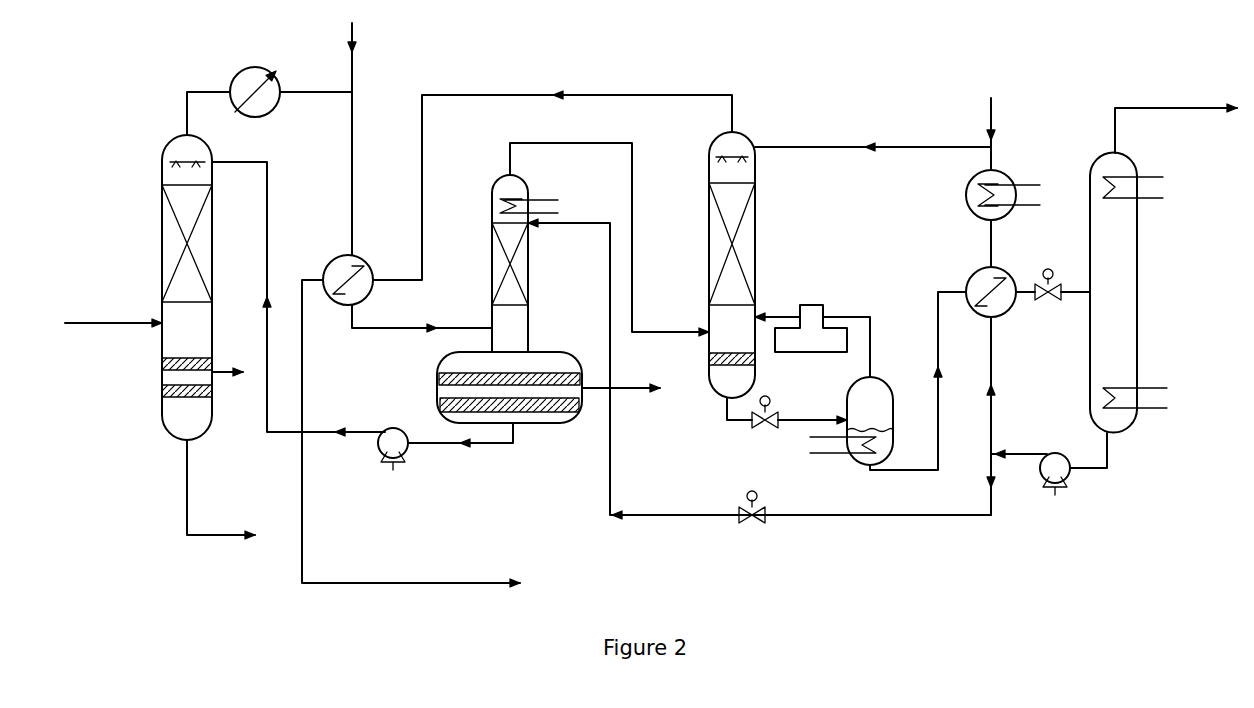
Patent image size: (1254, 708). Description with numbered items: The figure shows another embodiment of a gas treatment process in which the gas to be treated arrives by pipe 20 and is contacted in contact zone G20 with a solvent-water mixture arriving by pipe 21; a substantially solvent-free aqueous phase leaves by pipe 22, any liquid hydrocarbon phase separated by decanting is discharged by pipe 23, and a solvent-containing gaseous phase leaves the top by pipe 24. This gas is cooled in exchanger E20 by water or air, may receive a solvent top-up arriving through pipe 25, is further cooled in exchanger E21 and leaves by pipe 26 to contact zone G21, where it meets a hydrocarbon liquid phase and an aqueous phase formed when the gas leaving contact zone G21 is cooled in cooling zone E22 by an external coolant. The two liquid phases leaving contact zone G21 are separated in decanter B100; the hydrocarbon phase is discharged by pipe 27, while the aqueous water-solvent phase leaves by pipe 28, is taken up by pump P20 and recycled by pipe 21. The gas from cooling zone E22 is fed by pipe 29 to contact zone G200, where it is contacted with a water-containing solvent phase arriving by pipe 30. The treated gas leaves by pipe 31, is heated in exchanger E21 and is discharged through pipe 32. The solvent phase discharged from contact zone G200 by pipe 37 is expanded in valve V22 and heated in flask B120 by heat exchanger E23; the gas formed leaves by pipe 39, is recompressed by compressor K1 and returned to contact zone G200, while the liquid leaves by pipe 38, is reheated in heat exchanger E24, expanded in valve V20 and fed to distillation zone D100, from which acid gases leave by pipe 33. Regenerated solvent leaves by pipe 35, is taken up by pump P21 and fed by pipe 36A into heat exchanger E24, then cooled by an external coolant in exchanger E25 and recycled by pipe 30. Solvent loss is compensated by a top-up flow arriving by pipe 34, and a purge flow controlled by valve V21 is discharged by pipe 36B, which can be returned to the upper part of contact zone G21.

The pipe 20 is at (68, 320).
The pipe 21 is at (268, 202).
The pipe 22 is at (187, 480).
The pipe 23 is at (227, 368).
The pipe 24 is at (206, 89).
The pipe 25 is at (355, 35).
The pipe 26 is at (418, 324).
The pipe 27 is at (620, 388).
The pipe 28 is at (518, 445).
The pipe 29 is at (608, 142).
The pipe 30 is at (914, 142).
The pipe 31 is at (623, 94).
The pipe 32 is at (442, 580).
The pipe 33 is at (1198, 108).
The pipe 34 is at (995, 110).
The pipe 35 is at (1107, 470).
The pipe 36A is at (993, 393).
The pipe 36B is at (875, 518).
The pipe 37 is at (722, 411).
The pipe 38 is at (917, 381).
The pipe 39 is at (868, 315).
The exchanger E20 is at (266, 67).
The exchanger E21 is at (362, 256).
The cooling zone E22 is at (490, 203).
The heat exchanger E23 is at (834, 461).
The heat exchanger E24 is at (973, 279).
The exchanger E25 is at (984, 177).
The contact zone G20 is at (160, 288).
The contact zone G21 is at (530, 280).
The contact zone G200 is at (708, 202).
The decanter B100 is at (447, 363).
The flask B120 is at (900, 360).
The distillation zone D100 is at (1137, 324).
The compressor K1 is at (810, 302).
The pump P20 is at (392, 462).
The pump P21 is at (1033, 485).
The valve V20 is at (1053, 300).
The valve V21 is at (735, 520).
The valve V22 is at (775, 405).